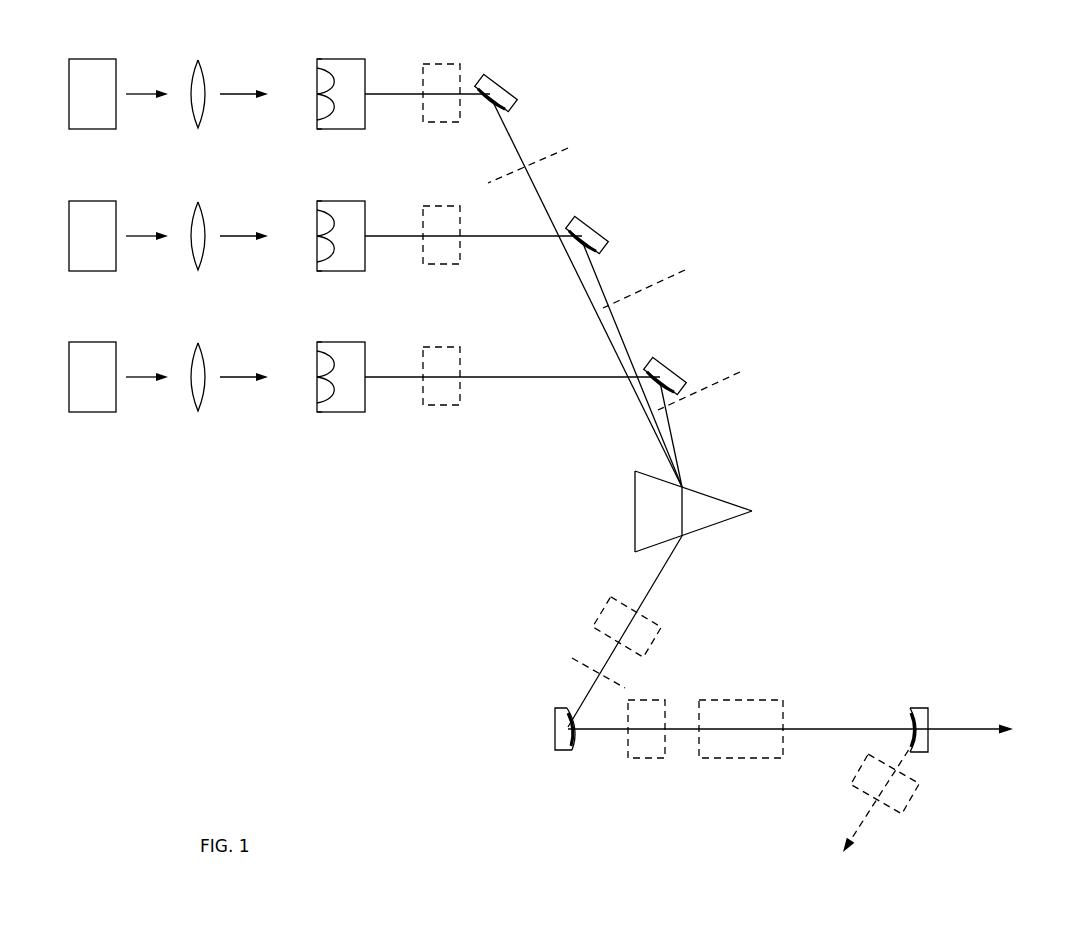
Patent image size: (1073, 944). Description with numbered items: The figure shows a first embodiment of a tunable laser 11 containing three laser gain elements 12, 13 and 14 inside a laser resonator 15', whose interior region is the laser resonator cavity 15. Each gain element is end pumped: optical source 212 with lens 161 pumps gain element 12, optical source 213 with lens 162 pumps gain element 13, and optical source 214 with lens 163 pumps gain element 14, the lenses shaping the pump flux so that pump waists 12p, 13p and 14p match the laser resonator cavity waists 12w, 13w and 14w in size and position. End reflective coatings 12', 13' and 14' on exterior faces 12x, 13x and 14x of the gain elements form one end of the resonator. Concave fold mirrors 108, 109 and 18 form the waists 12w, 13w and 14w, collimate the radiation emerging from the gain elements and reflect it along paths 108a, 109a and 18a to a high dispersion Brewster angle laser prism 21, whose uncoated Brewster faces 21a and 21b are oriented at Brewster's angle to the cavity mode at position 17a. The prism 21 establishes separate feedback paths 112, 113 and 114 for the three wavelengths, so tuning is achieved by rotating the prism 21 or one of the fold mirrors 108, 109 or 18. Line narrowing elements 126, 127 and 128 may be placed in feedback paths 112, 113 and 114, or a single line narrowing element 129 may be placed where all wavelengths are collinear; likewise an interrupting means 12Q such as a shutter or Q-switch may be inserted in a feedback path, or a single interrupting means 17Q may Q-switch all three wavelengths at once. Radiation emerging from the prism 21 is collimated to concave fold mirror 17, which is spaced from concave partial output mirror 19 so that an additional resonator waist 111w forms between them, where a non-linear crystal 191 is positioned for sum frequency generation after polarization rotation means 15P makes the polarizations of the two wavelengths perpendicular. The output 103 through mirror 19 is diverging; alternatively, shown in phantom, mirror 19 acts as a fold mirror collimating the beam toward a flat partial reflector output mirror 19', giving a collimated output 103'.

The optical source 212 is at (88, 59).
The optical source 213 is at (88, 201).
The optical source 214 is at (88, 342).
The lens 161 is at (196, 60).
The lens 162 is at (196, 202).
The lens 163 is at (196, 343).
The laser gain element 12 is at (352, 77).
The laser gain element 13 is at (352, 219).
The laser gain element 14 is at (352, 360).
The exterior face 12x is at (318, 60).
The laser resonator cavity waist 12w is at (317, 80).
The pump waist 12p is at (317, 112).
The end reflective coating 12' is at (291, 140).
The exterior face 13x is at (318, 202).
The laser resonator cavity waist 13w is at (317, 222).
The pump waist 13p is at (317, 254).
The end reflective coating 13' is at (291, 282).
The exterior face 14x is at (318, 343).
The laser resonator cavity waist 14w is at (317, 363).
The pump waist 14p is at (317, 395).
The end reflective coating 14' is at (291, 423).
The feedback path 112 is at (400, 93).
The feedback path 113 is at (400, 235).
The feedback path 114 is at (400, 376).
The interrupting means 12Q is at (445, 123).
The concave fold mirror 108 is at (497, 80).
The path 108a is at (525, 147).
The line narrowing element 126 is at (545, 160).
The concave fold mirror 109 is at (590, 222).
The path 109a is at (605, 282).
The line narrowing element 127 is at (661, 283).
The concave fold mirror 18 is at (665, 362).
The line narrowing element 128 is at (716, 386).
The path 18a is at (676, 437).
The laser resonator 15' is at (851, 368).
The tunable laser 11 is at (542, 519).
The laser prism 21 is at (707, 514).
The Brewster face 21a is at (733, 502).
The Brewster face 21b is at (733, 520).
The position 17a is at (684, 537).
The interrupting means 17Q is at (655, 641).
The line narrowing element 129 is at (577, 667).
The concave fold mirror 17 is at (556, 720).
The output 103 is at (811, 729).
The polarization rotation means 15P is at (650, 758).
The non-linear crystal 191 is at (745, 758).
The resonator waist 111w is at (745, 729).
The output mirror 19 is at (947, 709).
The collimated output 103' is at (867, 808).
The output mirror 19' is at (918, 800).
The laser resonator cavity 15 is at (892, 595).